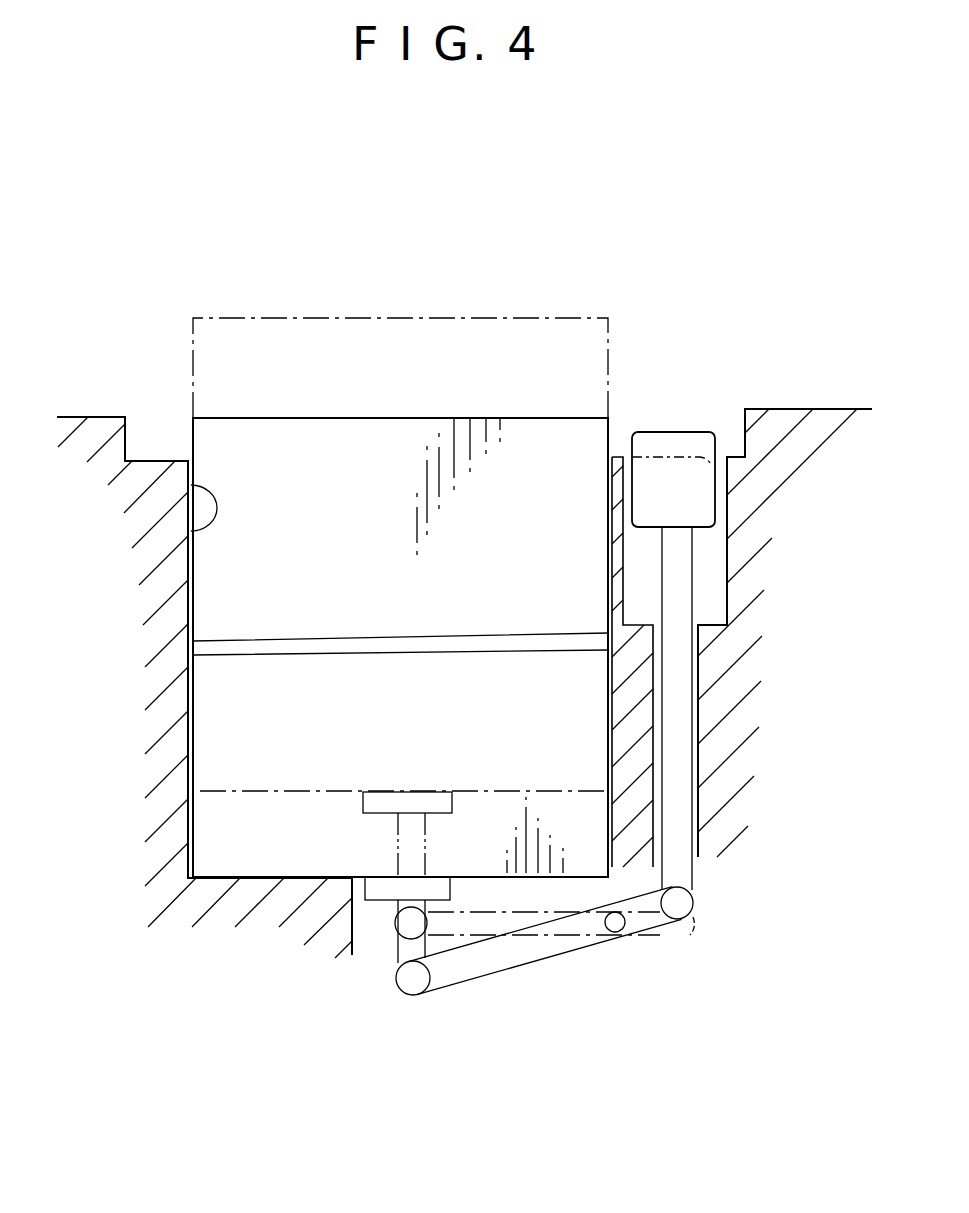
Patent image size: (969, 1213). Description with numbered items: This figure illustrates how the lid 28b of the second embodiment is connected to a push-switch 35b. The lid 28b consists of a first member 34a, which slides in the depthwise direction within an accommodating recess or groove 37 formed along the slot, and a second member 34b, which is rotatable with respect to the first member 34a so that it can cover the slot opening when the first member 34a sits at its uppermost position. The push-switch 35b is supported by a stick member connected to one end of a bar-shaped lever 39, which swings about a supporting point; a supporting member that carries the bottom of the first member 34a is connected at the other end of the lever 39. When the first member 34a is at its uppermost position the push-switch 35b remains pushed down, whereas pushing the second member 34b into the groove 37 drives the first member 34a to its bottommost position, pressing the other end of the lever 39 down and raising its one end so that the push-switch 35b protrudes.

The lid 28b is at (338, 478).
The first member 34a is at (227, 725).
The second member 34b is at (510, 443).
The push-switch 35b is at (673, 442).
The accommodating recess or groove 37 is at (202, 529).
The lever 39 is at (547, 947).